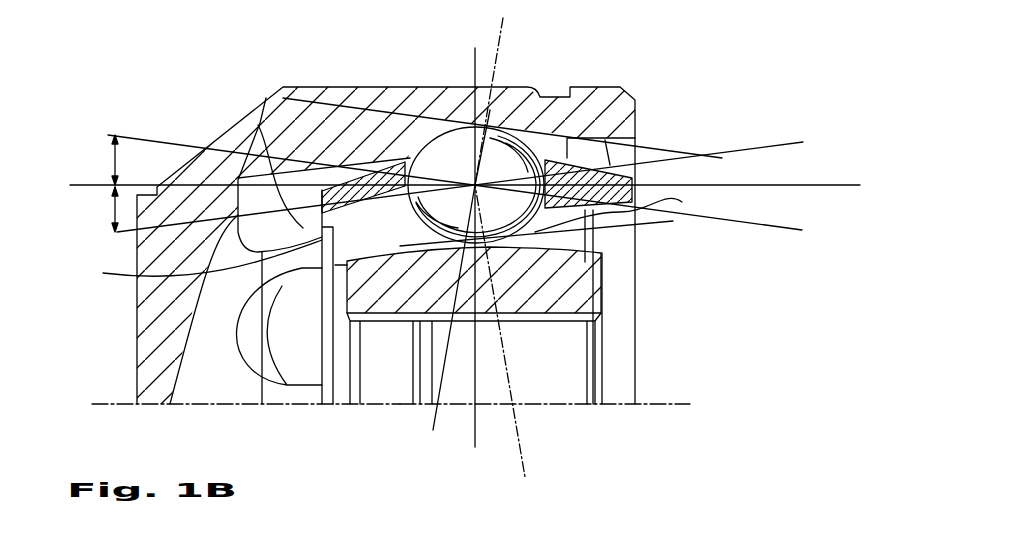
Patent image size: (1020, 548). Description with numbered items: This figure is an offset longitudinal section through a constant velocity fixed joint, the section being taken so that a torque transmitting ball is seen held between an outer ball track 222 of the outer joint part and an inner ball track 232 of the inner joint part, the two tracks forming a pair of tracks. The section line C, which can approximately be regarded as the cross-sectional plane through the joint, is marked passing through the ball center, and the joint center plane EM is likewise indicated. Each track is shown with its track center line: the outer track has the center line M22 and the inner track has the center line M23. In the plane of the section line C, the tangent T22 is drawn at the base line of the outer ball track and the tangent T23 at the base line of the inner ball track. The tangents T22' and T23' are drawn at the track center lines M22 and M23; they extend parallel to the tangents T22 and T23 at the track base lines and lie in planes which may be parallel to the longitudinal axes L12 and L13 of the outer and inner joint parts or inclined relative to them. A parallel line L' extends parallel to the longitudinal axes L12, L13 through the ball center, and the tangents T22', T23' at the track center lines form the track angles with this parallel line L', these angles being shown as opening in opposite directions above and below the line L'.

The outer ball track 222 is at (370, 137).
The inner ball track 232 is at (334, 322).
The track center line M22 is at (255, 126).
The track center line M23 is at (682, 202).
The joint center plane EM is at (473, 62).
The sectional line C- C is at (553, 32).
The tangent at the ball track base line T22 is at (502, 125).
The tangent at the ball track base line T23 is at (556, 250).
The tangent at the track center line T22' is at (473, 197).
The tangent at the track center line T23' is at (477, 170).
The parallel line L' is at (468, 168).
The longitudinal axis of the outer joint part L12 is at (113, 404).
The longitudinal axis of the inner joint part L13 is at (670, 404).